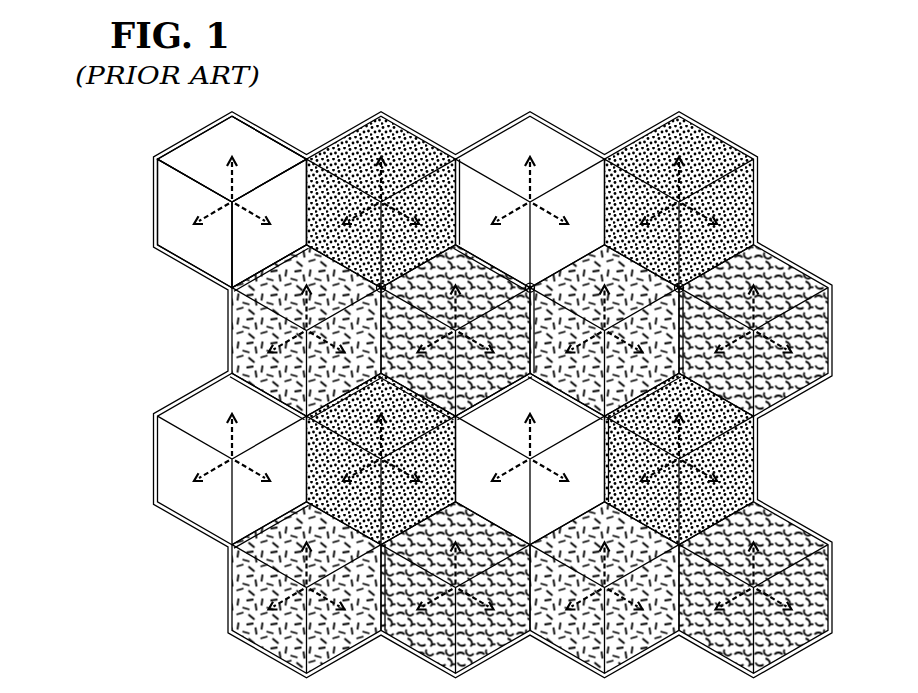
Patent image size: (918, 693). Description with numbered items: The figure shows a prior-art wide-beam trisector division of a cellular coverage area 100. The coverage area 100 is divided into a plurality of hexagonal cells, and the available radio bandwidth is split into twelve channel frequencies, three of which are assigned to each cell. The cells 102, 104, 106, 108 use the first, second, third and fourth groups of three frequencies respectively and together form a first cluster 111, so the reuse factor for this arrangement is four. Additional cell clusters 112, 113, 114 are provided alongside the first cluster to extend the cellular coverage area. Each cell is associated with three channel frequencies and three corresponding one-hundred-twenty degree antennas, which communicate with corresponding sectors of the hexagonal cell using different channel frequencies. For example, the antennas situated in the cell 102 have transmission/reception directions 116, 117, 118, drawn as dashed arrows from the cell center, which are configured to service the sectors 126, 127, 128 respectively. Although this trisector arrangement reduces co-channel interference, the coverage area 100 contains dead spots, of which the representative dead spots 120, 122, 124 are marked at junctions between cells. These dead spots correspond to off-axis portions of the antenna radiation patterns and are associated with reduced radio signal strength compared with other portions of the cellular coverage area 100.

The cellular coverage area 100 is at (603, 82).
The cell 102 is at (167, 209).
The cell 104 is at (418, 150).
The cell 106 is at (500, 399).
The cell 108 is at (247, 333).
The first cluster 111 is at (258, 127).
The cell cluster 112 is at (712, 124).
The cell cluster 113 is at (626, 662).
The cell cluster 114 is at (328, 662).
The transmission/reception direction 116 is at (228, 178).
The transmission/reception direction 117 is at (258, 207).
The transmission/reception direction 118 is at (212, 206).
The dead spot 120 is at (379, 285).
The dead spot 122 is at (527, 285).
The dead spot 124 is at (677, 285).
The sector 126 is at (213, 143).
The sector 127 is at (252, 244).
The sector 128 is at (167, 224).